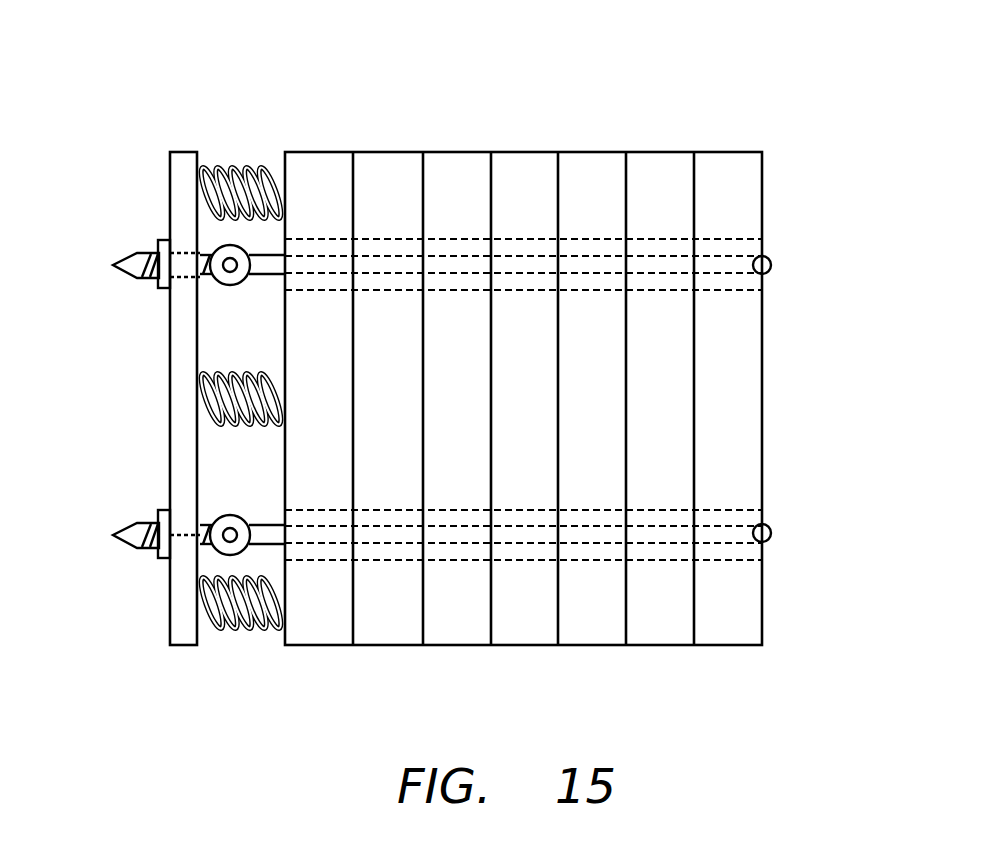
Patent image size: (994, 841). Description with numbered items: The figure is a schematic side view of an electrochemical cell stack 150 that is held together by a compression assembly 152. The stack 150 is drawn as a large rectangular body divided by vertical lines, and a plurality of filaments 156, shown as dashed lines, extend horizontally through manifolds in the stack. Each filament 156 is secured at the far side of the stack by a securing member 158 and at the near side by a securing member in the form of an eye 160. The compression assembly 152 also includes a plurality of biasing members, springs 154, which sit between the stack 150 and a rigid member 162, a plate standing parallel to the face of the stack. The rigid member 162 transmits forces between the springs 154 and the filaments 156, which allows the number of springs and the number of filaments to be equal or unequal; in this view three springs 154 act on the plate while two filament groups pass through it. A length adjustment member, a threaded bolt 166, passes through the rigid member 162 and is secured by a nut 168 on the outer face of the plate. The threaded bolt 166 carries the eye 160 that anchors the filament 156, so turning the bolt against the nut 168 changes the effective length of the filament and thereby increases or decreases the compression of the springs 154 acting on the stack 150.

The electrochemical cell stack 150 is at (524, 152).
The compression assembly 152 is at (214, 112).
The spring 154 is at (245, 165).
The filament 156 is at (641, 256).
The securing member 158 is at (772, 265).
The eye 160 is at (233, 283).
The rigid member 162 is at (170, 413).
The threaded bolt 166 is at (120, 273).
The nut 168 is at (158, 243).